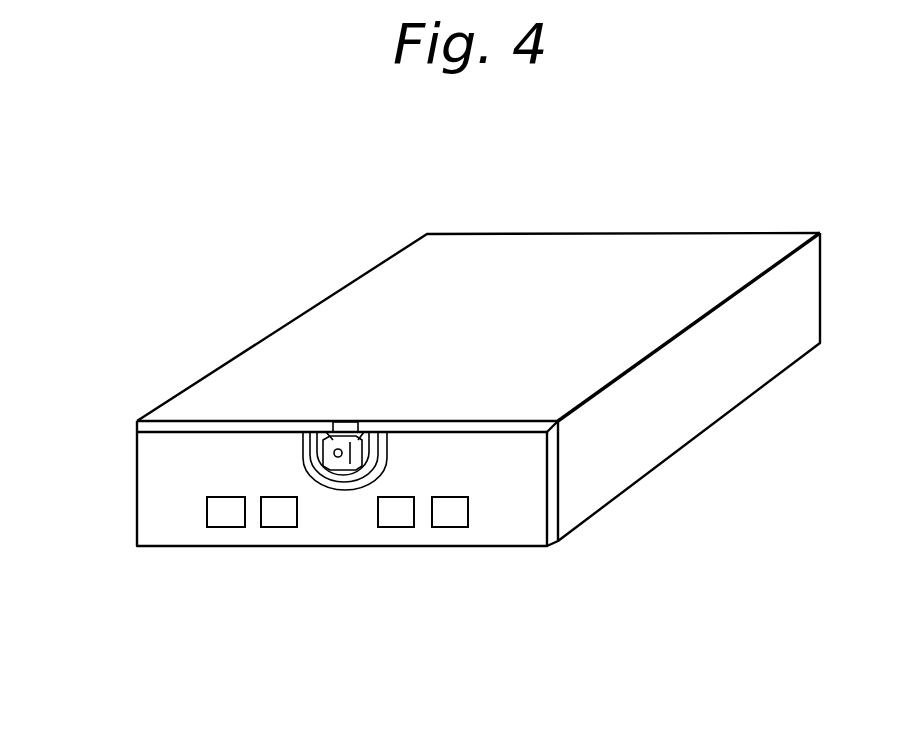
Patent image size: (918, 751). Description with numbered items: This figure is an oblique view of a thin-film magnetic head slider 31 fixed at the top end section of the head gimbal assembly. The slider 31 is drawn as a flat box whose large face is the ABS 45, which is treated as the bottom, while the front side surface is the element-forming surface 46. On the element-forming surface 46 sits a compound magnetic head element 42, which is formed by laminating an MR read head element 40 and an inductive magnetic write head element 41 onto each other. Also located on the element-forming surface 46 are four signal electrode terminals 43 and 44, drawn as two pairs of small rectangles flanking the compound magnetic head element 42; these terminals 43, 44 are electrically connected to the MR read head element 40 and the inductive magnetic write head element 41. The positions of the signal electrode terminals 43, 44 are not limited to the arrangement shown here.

The magnetic head slider 31 is at (611, 219).
The MR read head element 40 is at (312, 437).
The inductive magnetic write head element 41 is at (315, 450).
The compound magnetic head element 42 is at (340, 486).
The signal electrode terminal 43 is at (397, 517).
The signal electrode terminal 44 is at (279, 516).
The ABS 45 is at (360, 323).
The element-forming surface 46 is at (182, 458).